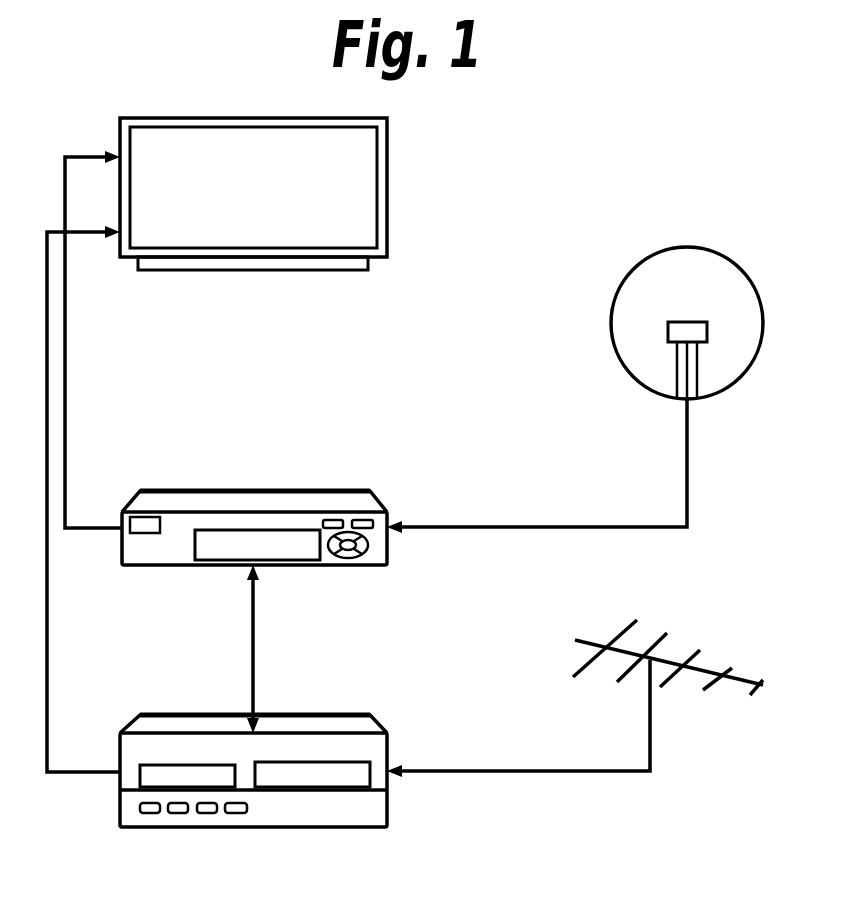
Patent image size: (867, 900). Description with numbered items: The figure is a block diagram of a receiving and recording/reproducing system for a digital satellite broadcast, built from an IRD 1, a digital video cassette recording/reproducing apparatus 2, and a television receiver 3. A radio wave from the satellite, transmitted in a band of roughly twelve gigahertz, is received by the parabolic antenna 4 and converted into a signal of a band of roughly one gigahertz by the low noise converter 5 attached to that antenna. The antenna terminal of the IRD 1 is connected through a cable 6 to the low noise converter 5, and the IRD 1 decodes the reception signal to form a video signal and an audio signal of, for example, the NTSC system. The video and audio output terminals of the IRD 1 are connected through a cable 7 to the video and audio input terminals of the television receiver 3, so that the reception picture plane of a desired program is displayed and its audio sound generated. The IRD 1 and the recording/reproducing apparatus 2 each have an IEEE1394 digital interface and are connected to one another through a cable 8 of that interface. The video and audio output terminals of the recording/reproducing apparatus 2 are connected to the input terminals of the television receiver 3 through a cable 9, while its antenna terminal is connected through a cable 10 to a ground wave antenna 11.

The IRD 1 is at (255, 491).
The digital video cassette recording/reproducing apparatus 2 is at (330, 715).
The television receiver 3 is at (387, 192).
The parabolic antenna 4 is at (690, 248).
The low noise converter 5 is at (677, 331).
The cable 6 is at (440, 530).
The cable 7 is at (65, 360).
The cable 8 is at (255, 642).
The cable 9 is at (47, 642).
The cable 10 is at (540, 771).
The ground wave antenna 11 is at (663, 662).